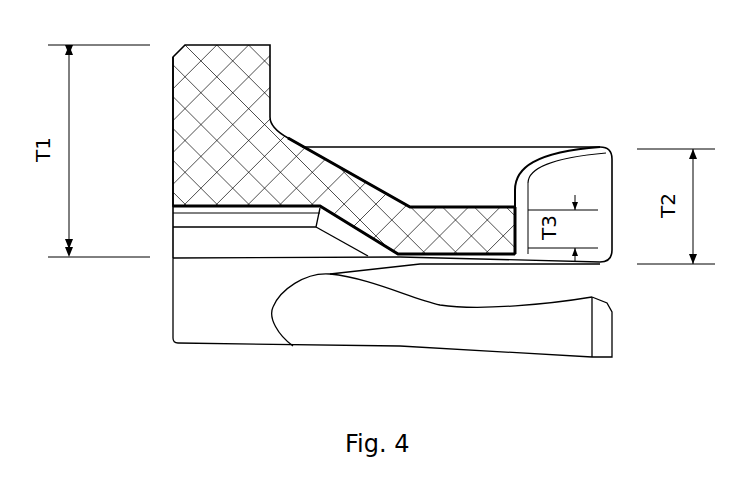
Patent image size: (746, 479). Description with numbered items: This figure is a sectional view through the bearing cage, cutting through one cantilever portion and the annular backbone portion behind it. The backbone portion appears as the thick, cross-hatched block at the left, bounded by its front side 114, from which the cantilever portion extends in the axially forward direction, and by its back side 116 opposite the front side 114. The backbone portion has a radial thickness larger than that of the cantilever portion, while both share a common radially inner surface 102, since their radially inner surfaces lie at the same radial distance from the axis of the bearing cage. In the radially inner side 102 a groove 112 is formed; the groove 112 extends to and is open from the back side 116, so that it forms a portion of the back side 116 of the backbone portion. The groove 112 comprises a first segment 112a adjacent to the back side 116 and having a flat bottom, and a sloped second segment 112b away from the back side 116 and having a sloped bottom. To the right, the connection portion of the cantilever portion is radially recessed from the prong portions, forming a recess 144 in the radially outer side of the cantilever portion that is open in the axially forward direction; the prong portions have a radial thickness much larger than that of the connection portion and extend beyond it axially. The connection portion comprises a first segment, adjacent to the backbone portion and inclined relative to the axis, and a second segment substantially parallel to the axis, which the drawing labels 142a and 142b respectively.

The common radially inner surface 102 is at (210, 322).
The groove 112 is at (210, 233).
The first segment 112a is at (208, 247).
The sloped second segment 112b is at (342, 248).
The front side 114 is at (272, 80).
The back side 116 is at (172, 113).
The sloped surface of insert 142a is at (340, 172).
The curved lip surface of insert 142b is at (478, 203).
The recess 144 is at (443, 163).